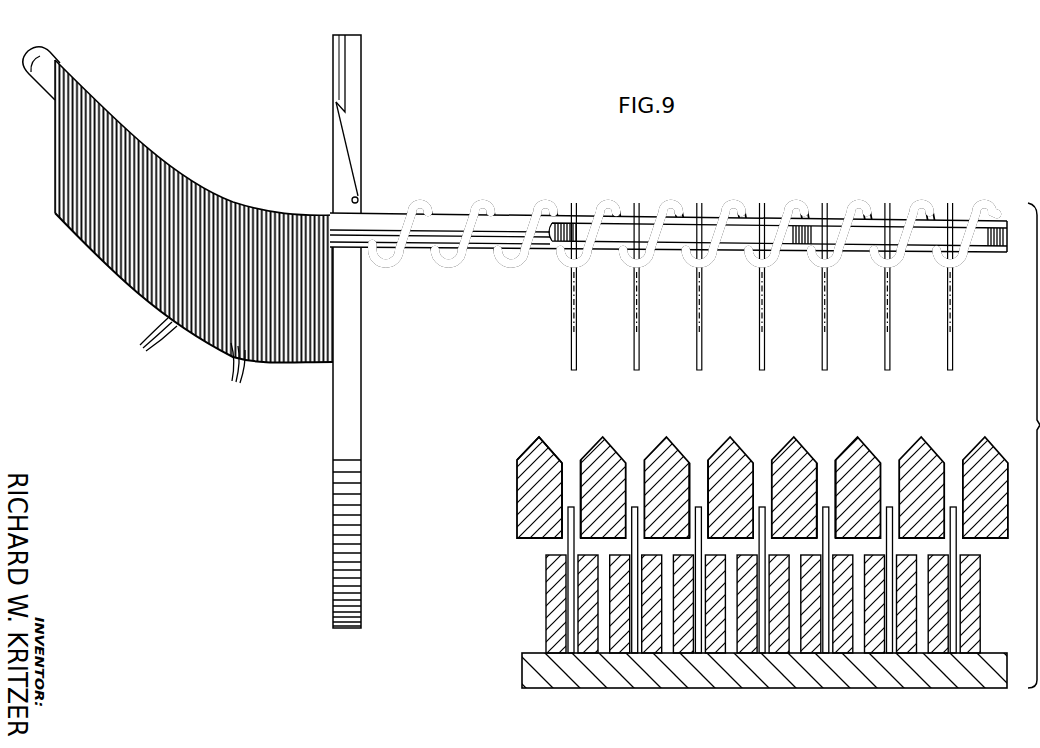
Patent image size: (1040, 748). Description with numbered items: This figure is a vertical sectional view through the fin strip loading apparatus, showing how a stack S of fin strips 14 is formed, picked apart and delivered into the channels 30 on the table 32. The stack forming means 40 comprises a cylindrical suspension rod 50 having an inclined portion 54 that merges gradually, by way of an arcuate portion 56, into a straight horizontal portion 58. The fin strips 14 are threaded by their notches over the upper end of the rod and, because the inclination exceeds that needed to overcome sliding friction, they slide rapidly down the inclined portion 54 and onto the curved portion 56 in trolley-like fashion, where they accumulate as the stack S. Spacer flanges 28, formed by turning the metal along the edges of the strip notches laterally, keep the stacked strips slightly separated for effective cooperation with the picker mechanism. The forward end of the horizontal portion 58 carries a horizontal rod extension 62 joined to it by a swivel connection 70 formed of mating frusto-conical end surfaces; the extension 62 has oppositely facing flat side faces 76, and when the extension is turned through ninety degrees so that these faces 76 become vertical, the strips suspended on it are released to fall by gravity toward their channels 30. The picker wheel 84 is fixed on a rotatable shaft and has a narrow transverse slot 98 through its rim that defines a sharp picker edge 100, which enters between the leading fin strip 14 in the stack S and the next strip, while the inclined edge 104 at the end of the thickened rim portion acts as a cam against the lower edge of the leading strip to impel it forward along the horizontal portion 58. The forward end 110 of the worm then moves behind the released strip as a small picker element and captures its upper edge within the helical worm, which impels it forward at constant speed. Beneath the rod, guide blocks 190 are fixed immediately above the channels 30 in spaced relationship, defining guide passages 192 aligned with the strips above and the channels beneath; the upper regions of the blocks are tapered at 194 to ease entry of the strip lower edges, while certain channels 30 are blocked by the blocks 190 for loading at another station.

The fin strip 14 is at (156, 150).
The spacer flange 28 is at (181, 356).
The channel 30 is at (960, 615).
The table 32 is at (975, 680).
The stack forming means 40 is at (219, 165).
The suspension rod 50 is at (449, 212).
The inclined portion 54 is at (47, 60).
The arcuate portion 56 is at (236, 203).
The horizontal portion 58 is at (380, 222).
The rod extension 62 is at (818, 222).
The swivel connection 70 is at (488, 222).
The flat side face 76 is at (683, 232).
The picker wheel 84 is at (364, 468).
The transverse slot 98 is at (333, 100).
The picker edge 100 is at (333, 104).
The inclined edge 104 is at (352, 143).
The forward end of worm 110 is at (607, 199).
The guide block 190 is at (537, 457).
The guide passage 192 is at (560, 482).
The tapered upper region 194 is at (548, 452).
The stack S is at (192, 345).